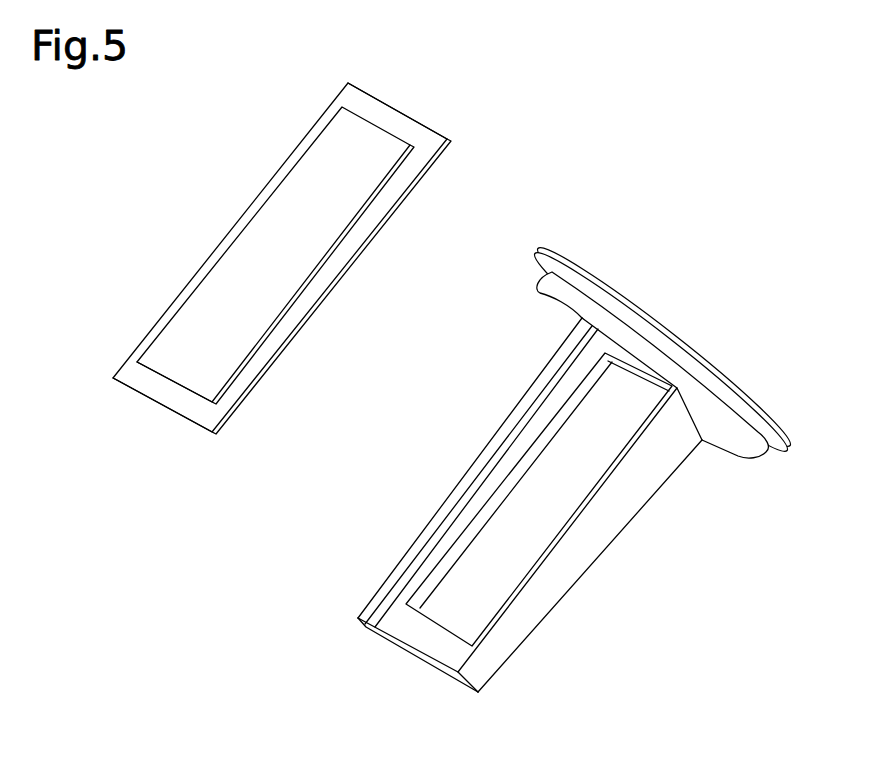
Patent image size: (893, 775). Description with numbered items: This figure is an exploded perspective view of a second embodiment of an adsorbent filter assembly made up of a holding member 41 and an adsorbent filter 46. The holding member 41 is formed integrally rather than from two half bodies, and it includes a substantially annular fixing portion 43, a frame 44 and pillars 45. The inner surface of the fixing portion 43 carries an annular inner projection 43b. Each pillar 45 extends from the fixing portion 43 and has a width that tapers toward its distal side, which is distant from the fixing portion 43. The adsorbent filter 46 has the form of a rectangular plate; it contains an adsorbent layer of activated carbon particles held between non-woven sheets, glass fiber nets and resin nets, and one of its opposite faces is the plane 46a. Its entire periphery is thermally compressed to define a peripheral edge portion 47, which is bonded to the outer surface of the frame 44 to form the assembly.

The holding member 41 is at (714, 360).
The fixing portion 43 is at (772, 452).
The annular inner projection 43b is at (546, 280).
The frame 44 is at (637, 363).
The pillars 45 is at (483, 457).
The adsorbent filter 46 is at (282, 244).
The plane of the adsorbent filter 46a is at (247, 273).
The peripheral edge portion 47 is at (382, 115).